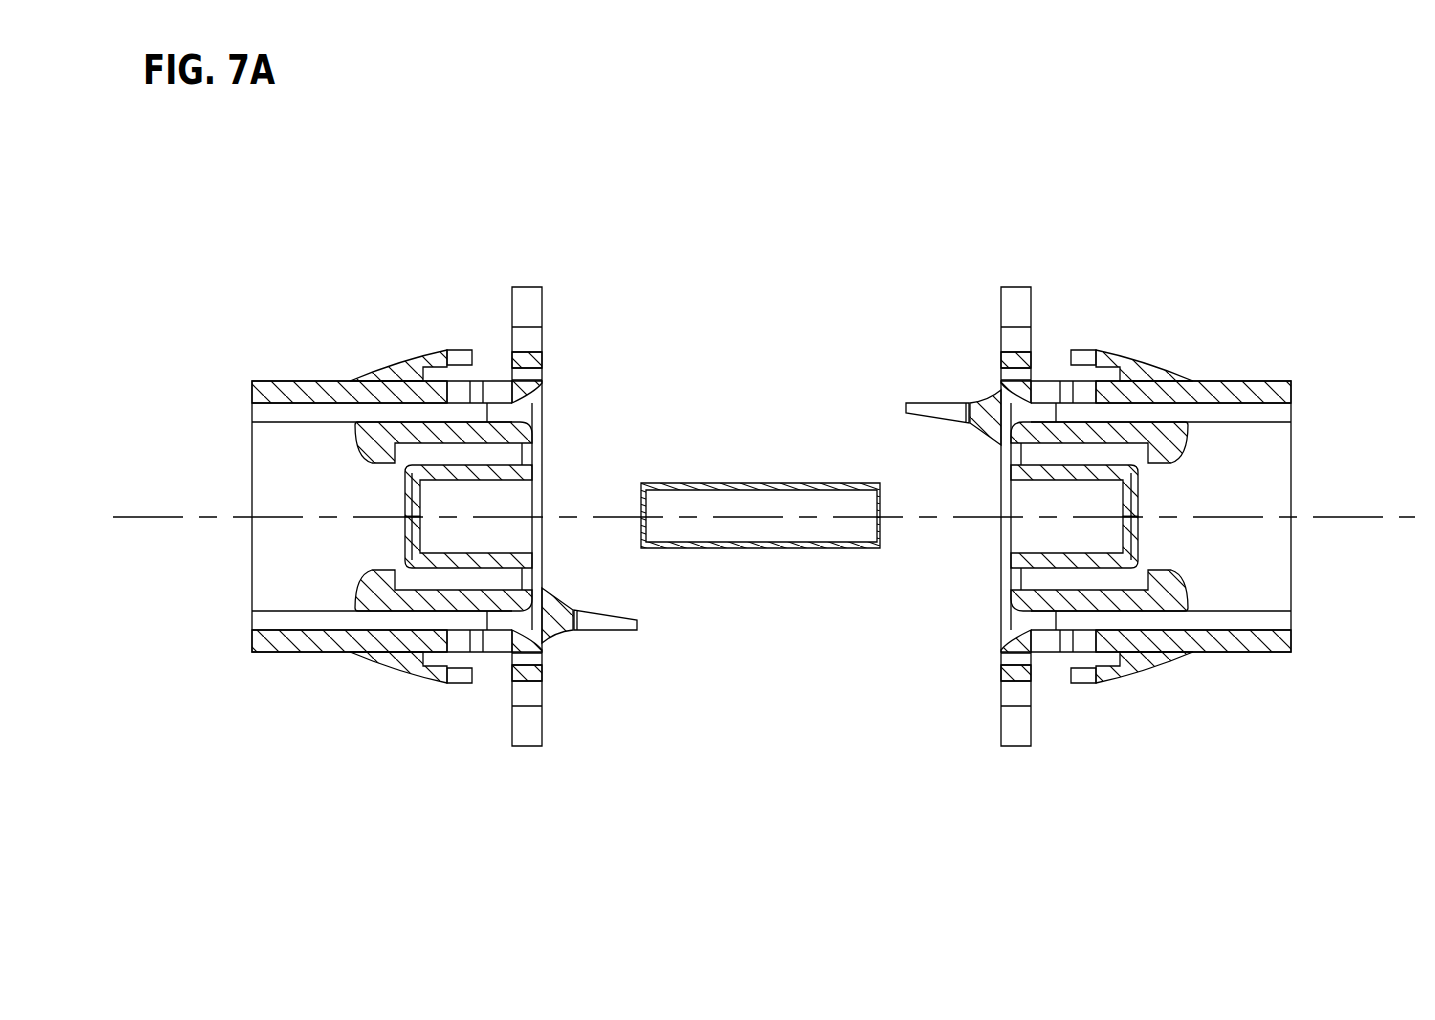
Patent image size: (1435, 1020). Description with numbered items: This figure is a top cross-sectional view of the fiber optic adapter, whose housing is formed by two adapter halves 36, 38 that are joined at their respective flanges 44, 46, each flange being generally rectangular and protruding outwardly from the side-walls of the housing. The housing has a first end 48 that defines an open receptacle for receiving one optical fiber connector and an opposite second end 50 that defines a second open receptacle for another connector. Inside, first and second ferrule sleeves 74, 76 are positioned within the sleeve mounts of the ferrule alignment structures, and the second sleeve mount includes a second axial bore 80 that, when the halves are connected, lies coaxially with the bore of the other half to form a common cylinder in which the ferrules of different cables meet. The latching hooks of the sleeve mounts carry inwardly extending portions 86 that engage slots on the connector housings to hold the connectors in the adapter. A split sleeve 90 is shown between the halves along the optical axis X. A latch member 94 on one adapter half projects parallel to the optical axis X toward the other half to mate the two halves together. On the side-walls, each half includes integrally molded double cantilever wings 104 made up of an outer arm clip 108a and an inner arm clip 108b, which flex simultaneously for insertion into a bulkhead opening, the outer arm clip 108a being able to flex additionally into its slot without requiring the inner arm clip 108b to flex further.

The first adapter half 36 is at (1210, 677).
The second adapter half 38 is at (325, 672).
The first flange 44 is at (526, 303).
The second flange 46 is at (527, 748).
The first end 48 is at (1186, 540).
The second end 50 is at (311, 600).
The first ferrule sleeve 74 is at (1048, 531).
The second ferrule sleeve 76 is at (505, 531).
The second axial bore 80 is at (510, 500).
The inwardly extending portions 86 is at (394, 464).
The split sleeve 90 is at (765, 483).
The latch member 94 is at (620, 632).
The double cantilever wings 104 is at (423, 360).
The outer arm clip 108a is at (458, 358).
The inner arm clip 108b is at (460, 390).
The optical axis X is at (143, 516).